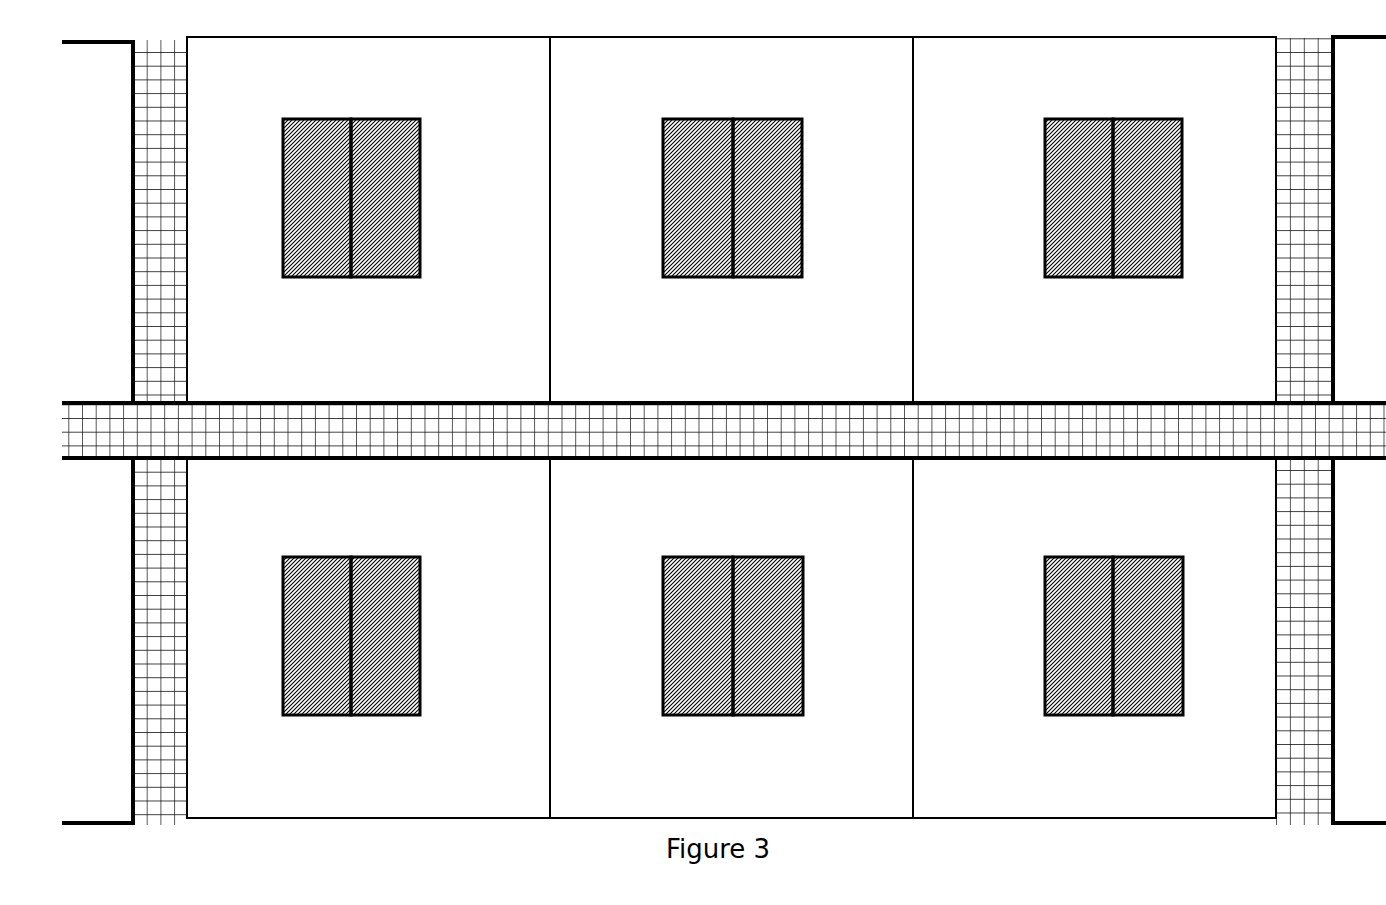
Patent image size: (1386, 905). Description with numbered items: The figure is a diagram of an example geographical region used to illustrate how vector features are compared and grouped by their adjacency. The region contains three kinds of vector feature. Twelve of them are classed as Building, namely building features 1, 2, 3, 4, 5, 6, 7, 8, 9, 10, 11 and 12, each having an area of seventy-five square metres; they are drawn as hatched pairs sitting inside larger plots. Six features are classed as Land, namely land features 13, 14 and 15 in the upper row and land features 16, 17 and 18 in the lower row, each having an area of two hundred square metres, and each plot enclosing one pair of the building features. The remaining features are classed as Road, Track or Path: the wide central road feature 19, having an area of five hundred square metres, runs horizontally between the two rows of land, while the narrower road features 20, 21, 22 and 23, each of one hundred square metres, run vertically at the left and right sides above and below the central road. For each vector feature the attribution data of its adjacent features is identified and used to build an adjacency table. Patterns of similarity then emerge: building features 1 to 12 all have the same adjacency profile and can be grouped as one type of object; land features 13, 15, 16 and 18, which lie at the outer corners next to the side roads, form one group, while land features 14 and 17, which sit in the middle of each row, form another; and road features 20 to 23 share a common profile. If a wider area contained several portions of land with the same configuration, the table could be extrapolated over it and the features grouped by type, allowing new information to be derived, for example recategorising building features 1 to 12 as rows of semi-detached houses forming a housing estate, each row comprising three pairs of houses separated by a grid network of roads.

The Building vector feature 1 is at (317, 198).
The Building vector feature 2 is at (385, 198).
The Building vector feature 3 is at (698, 198).
The Building vector feature 4 is at (767, 198).
The Building vector feature 5 is at (1079, 198).
The Building vector feature 6 is at (1147, 198).
The Building vector feature 7 is at (317, 636).
The Building vector feature 8 is at (385, 636).
The Building vector feature 9 is at (698, 636).
The Building vector feature 10 is at (768, 636).
The Building vector feature 11 is at (1079, 636).
The Building vector feature 12 is at (1148, 636).
The Land vector feature 13 is at (368, 220).
The Land vector feature 14 is at (731, 220).
The Land vector feature 15 is at (1094, 220).
The Land vector feature 16 is at (368, 638).
The Land vector feature 17 is at (731, 638).
The Land vector feature 18 is at (1094, 638).
The Road, Track or Path vector feature 19 is at (724, 430).
The Road, Track or Path vector feature 20 is at (124, 221).
The Road, Track or Path vector feature 21 is at (124, 641).
The Road, Track or Path vector feature 22 is at (1331, 220).
The Road, Track or Path vector feature 23 is at (1331, 641).